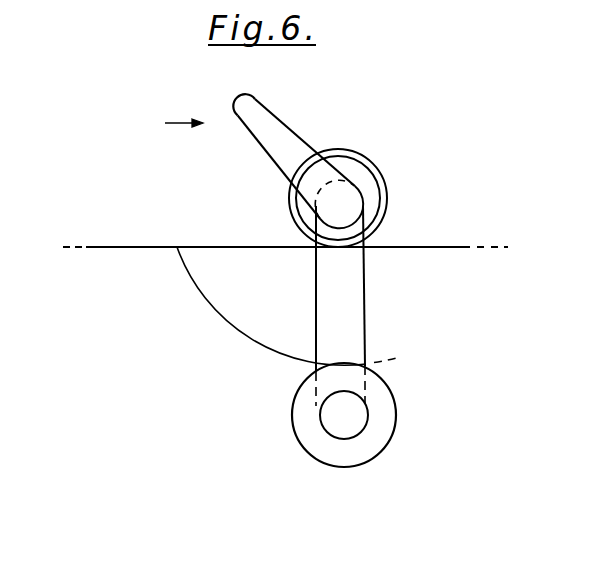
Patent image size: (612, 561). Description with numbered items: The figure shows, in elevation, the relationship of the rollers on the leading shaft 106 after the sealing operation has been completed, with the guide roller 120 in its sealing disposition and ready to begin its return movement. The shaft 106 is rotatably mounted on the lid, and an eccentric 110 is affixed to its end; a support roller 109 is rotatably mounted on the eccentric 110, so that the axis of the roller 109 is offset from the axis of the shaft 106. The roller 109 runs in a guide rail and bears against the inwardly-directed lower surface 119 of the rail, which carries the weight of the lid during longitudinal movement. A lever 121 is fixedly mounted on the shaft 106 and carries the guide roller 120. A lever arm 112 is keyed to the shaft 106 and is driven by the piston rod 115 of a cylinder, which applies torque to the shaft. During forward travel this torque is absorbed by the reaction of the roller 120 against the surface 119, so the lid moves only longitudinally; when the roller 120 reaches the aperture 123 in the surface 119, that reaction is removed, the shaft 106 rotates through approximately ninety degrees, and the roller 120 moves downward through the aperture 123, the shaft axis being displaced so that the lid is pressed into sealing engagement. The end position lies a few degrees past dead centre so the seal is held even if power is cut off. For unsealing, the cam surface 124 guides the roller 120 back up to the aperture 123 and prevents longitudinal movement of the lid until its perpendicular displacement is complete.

The shaft 106 is at (373, 196).
The support roller 109 is at (373, 168).
The eccentric 110 is at (366, 212).
The lever arm 112 is at (288, 132).
The piston rod 115 is at (174, 106).
The lower surface of the guide rail 119 is at (462, 247).
The guide roller 120 is at (395, 420).
The lever 121 is at (353, 331).
The aperture 123 is at (133, 247).
The cam surface 124 is at (227, 320).